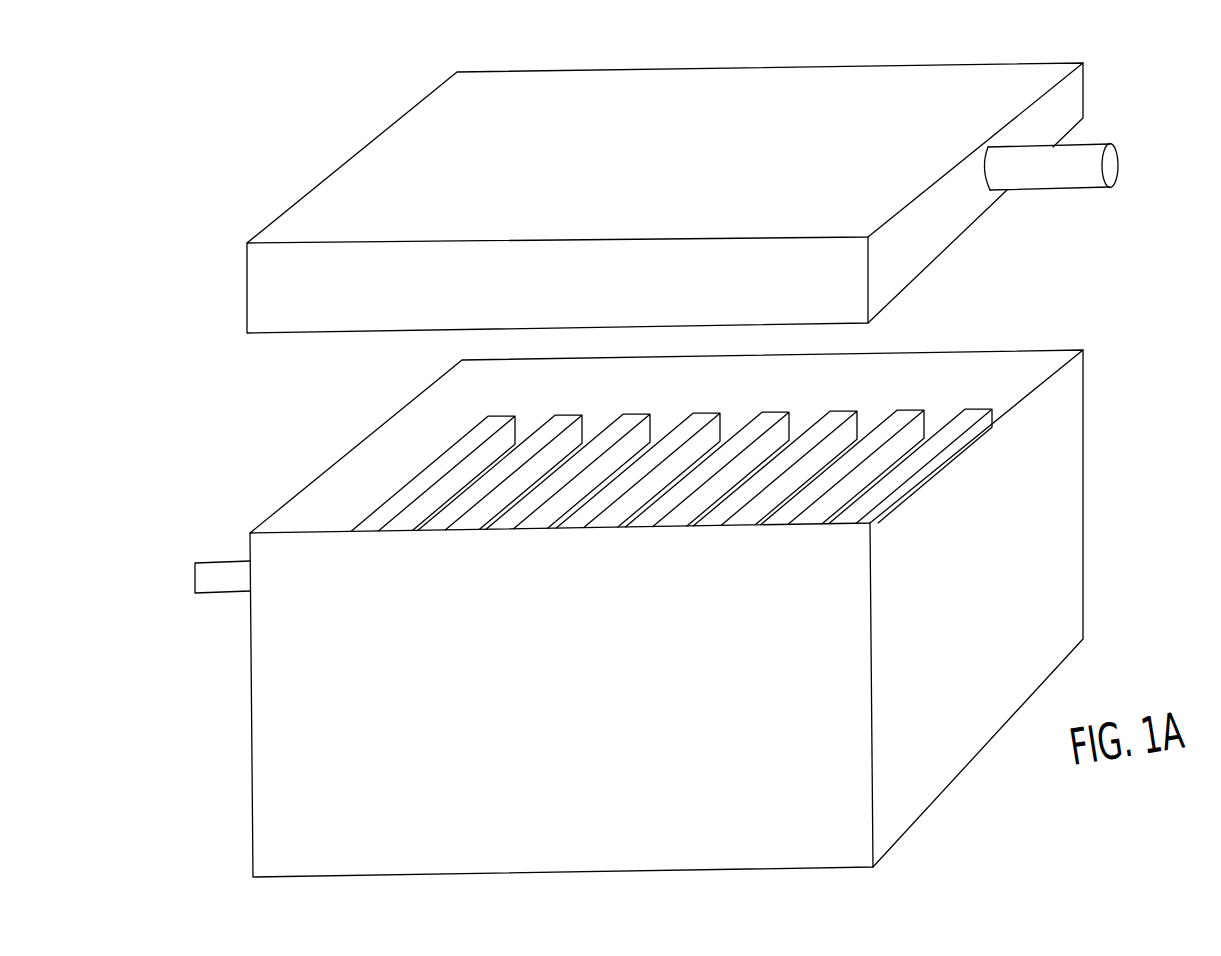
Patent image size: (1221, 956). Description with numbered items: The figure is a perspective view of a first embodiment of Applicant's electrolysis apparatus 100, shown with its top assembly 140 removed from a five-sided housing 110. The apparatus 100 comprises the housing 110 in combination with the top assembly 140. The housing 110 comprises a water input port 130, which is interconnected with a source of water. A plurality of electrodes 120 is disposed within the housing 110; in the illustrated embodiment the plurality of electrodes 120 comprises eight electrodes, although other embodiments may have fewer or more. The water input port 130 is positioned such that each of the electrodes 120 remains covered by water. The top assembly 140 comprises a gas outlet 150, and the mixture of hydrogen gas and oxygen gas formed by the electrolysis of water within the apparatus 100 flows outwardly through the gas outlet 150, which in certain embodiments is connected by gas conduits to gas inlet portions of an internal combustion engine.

The electrolysis apparatus 100 is at (1003, 786).
The housing 110 is at (1100, 458).
The plurality of electrodes 120 is at (835, 417).
The water input port 130 is at (215, 568).
The top assembly 140 is at (1093, 69).
The gas outlet 150 is at (1090, 153).